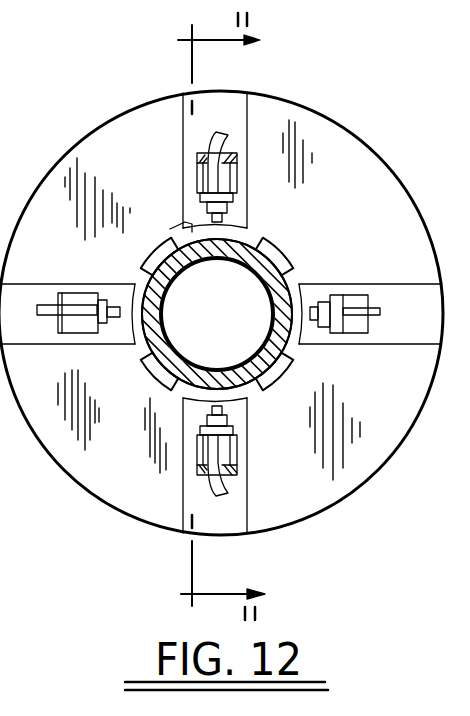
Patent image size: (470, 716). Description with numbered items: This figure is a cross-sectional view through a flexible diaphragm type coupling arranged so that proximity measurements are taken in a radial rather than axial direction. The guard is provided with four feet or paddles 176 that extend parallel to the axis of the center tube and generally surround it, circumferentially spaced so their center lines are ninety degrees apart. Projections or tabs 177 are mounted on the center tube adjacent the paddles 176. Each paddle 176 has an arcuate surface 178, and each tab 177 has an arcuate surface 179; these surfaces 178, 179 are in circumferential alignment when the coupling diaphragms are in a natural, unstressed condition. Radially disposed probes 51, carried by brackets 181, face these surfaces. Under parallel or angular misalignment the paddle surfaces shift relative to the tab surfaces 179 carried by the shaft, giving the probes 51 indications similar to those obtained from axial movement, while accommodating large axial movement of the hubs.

The probe 51 is at (212, 199).
The paddle 176 is at (232, 237).
The tab 177 is at (281, 251).
The arcuate surface 178 is at (170, 229).
The arcuate surface 179 is at (273, 244).
The bracket 181 is at (73, 325).